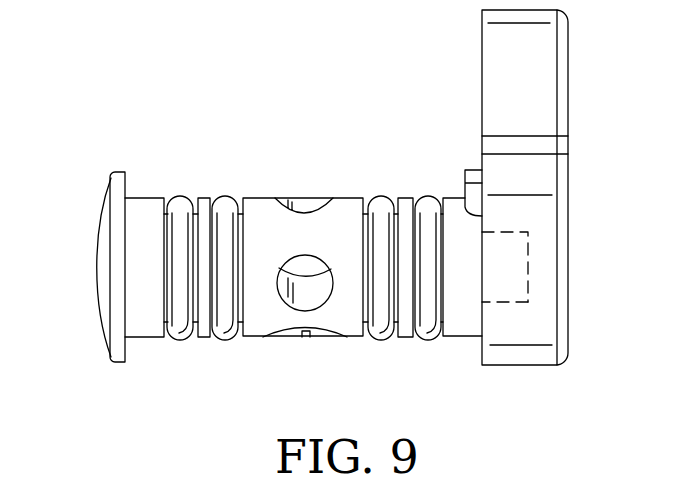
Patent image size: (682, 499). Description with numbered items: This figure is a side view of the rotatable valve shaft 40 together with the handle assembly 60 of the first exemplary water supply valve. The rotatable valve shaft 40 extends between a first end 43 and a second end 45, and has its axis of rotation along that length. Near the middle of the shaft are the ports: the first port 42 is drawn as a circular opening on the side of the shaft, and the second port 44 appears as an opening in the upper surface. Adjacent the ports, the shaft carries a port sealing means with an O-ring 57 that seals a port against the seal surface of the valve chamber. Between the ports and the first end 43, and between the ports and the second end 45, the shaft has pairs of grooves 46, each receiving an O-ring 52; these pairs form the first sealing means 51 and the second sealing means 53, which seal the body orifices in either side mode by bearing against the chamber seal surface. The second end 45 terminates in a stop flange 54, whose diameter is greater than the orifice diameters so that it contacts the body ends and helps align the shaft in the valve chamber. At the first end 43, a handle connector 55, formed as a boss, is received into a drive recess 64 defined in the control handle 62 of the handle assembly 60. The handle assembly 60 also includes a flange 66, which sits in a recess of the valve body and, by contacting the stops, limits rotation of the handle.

The rotatable valve shaft 40 is at (258, 147).
The first port 42 is at (306, 311).
The first end 43 is at (145, 328).
The second port 44 is at (302, 198).
The second end 45 is at (462, 330).
The groove 46 is at (412, 198).
The first sealing means 51 is at (199, 370).
The O-ring 52 is at (225, 197).
The second sealing means 53 is at (443, 356).
The stop flange 54 is at (105, 282).
The handle connector 55 is at (512, 285).
The O-ring 57 is at (271, 341).
The handle assembly 60 is at (600, 154).
The control handle 62 is at (568, 281).
The drive recess 64 is at (532, 252).
The flange 66 is at (472, 177).